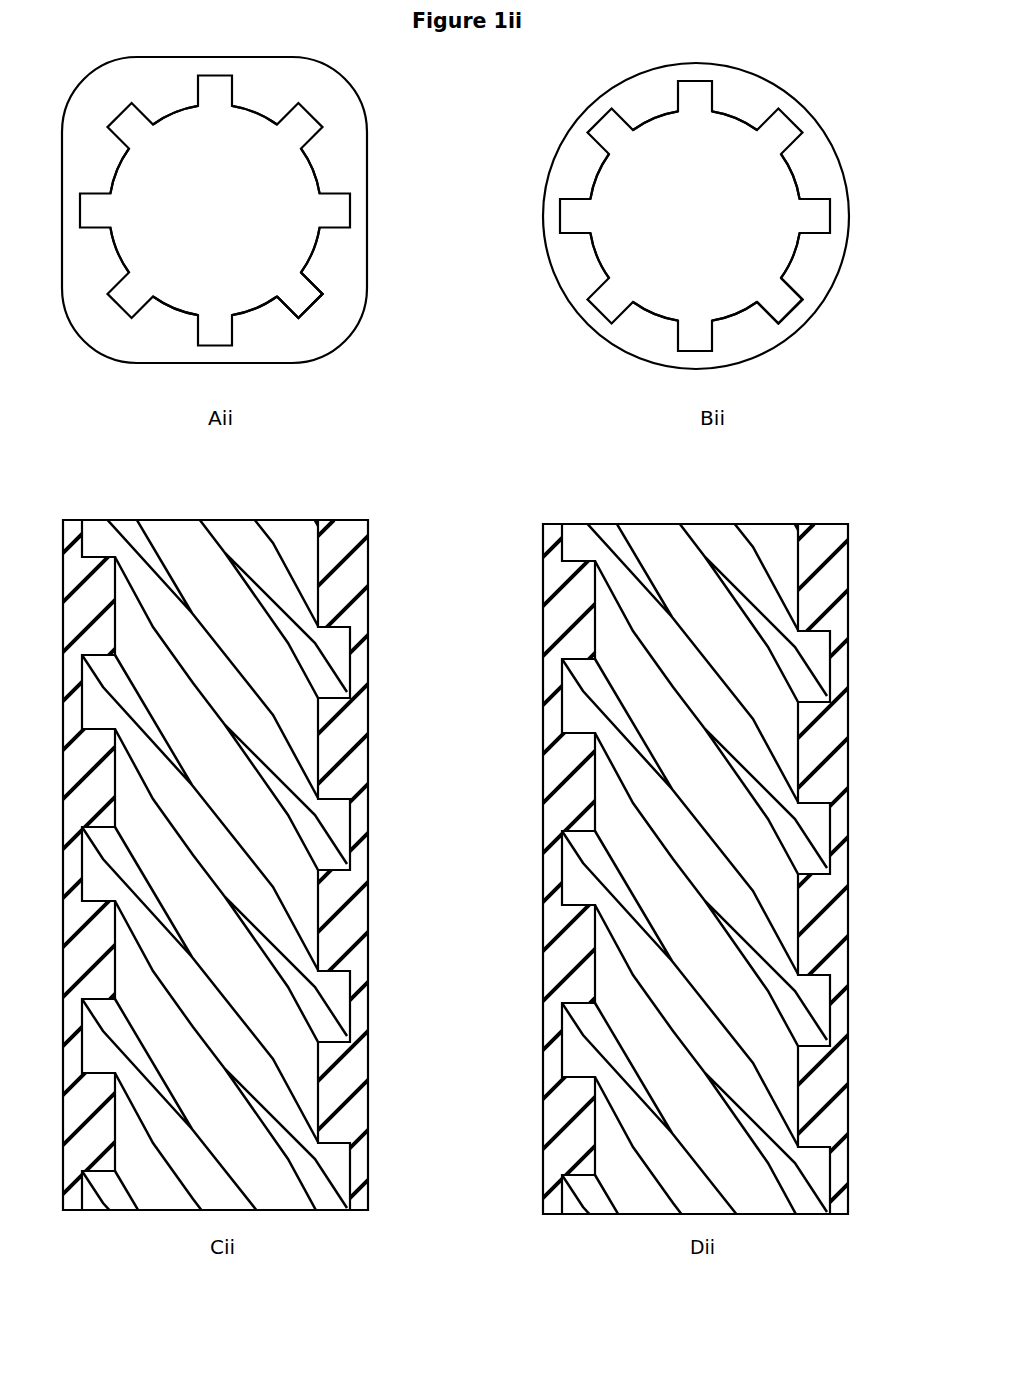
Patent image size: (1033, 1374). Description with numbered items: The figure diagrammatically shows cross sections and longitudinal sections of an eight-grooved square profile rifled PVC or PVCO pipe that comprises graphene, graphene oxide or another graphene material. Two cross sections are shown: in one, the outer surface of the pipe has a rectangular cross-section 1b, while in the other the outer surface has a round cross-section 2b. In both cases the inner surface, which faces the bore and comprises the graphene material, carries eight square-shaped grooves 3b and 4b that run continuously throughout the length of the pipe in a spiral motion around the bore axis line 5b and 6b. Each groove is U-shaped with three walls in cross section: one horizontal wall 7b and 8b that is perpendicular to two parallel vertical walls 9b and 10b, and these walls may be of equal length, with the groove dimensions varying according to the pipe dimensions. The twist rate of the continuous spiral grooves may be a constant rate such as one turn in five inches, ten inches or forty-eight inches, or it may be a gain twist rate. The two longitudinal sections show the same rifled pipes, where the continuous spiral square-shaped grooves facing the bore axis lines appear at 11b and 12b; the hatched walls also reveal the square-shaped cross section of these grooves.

The rectangular cross-section pipe outer surface 1b is at (68, 80).
The round cross-section pipe outer surface 2b is at (599, 80).
The square-shaped grooves 3b is at (144, 274).
The square-shaped grooves 4b is at (598, 203).
The bore axis line 5b is at (232, 207).
The bore axis line 6b is at (707, 208).
The horizontal wall 7b is at (321, 314).
The horizontal wall 8b is at (801, 316).
The parallel vertical walls 9b is at (300, 298).
The parallel vertical walls 10b is at (786, 295).
The continuous spiral square shaped grooves 11b is at (348, 661).
The continuous spiral square shaped grooves 12b is at (838, 676).